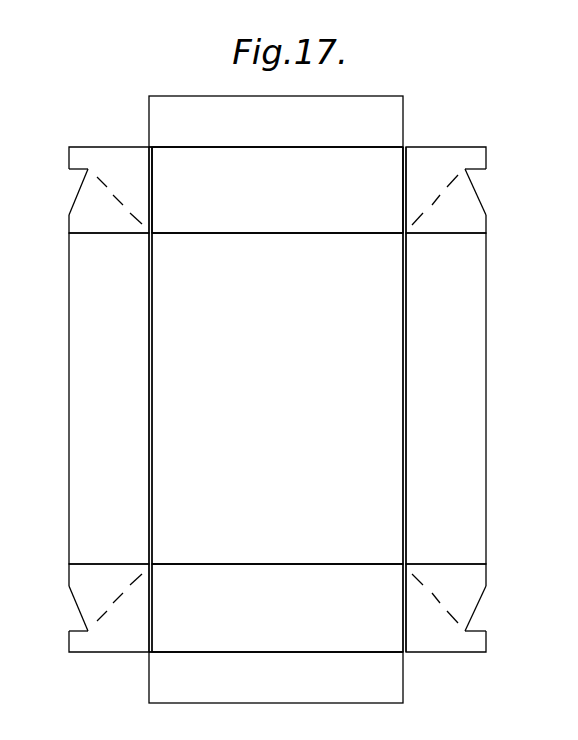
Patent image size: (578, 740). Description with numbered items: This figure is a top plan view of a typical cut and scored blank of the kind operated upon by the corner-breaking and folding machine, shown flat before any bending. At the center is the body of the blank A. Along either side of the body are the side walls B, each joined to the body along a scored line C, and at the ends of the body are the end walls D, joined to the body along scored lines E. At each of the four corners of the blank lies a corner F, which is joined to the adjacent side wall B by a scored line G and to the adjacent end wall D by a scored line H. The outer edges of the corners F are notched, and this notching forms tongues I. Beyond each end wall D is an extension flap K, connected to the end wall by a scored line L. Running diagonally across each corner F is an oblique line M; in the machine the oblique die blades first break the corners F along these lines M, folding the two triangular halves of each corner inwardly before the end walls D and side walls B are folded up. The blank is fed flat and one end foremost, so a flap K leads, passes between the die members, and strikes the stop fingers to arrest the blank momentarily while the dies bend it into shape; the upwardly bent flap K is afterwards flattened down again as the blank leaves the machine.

The body of the blank A is at (277, 398).
The side walls B is at (277, 398).
The scored lines C is at (152, 419).
The end walls D is at (277, 399).
The scored lines E is at (302, 236).
The corners F is at (80, 194).
The scored lines G is at (118, 238).
The scored lines H is at (152, 191).
The tongues I is at (76, 158).
The extension flaps K is at (276, 399).
The scored lines L is at (322, 147).
The oblique lines M is at (115, 198).